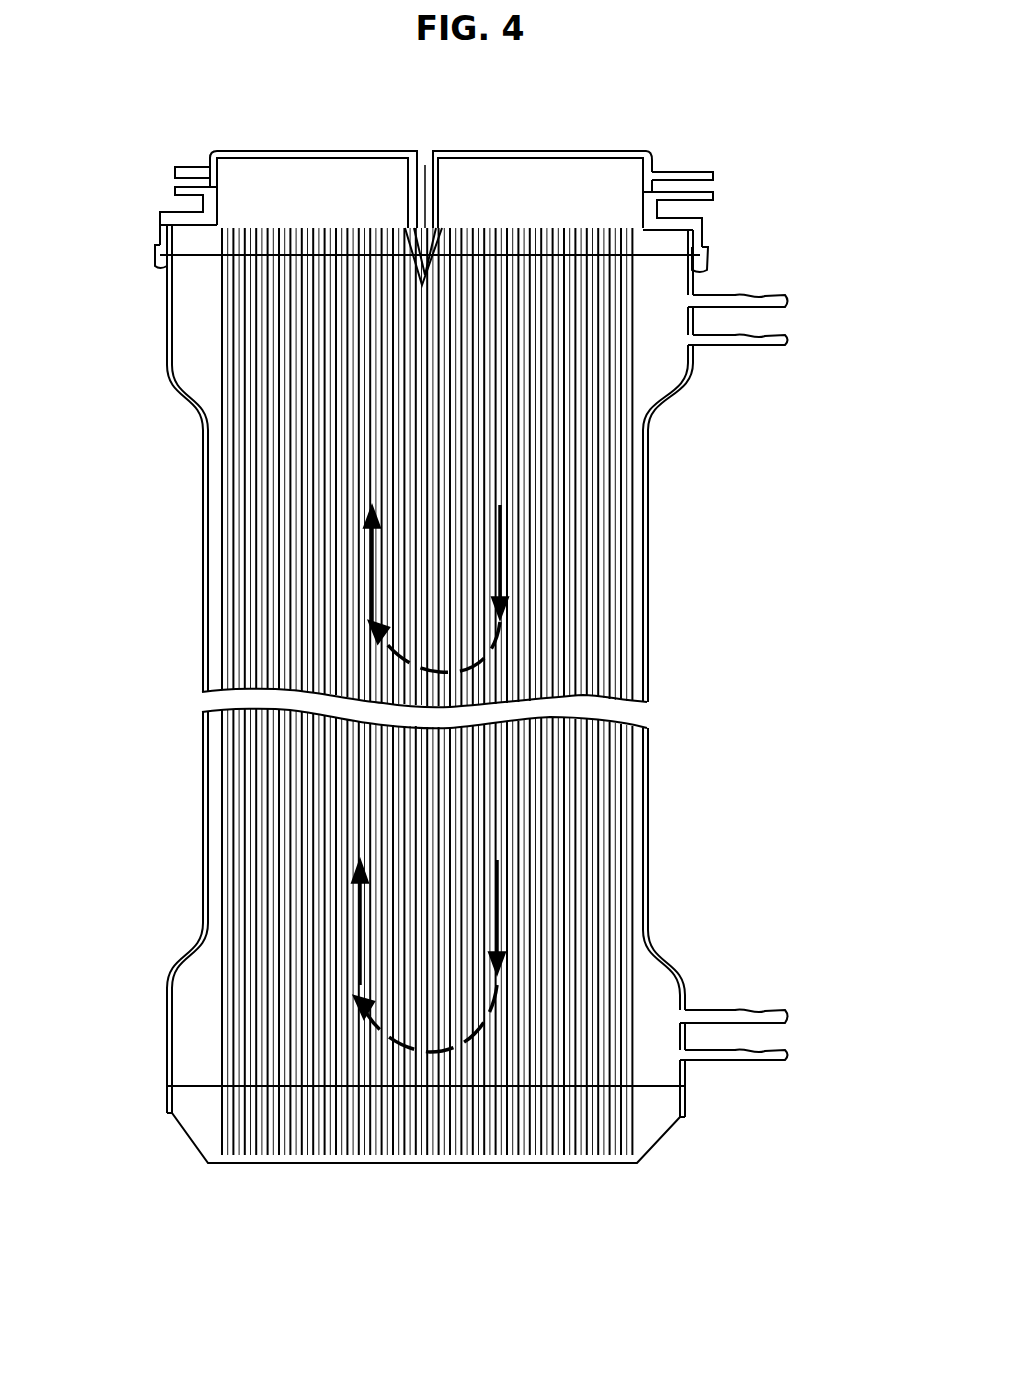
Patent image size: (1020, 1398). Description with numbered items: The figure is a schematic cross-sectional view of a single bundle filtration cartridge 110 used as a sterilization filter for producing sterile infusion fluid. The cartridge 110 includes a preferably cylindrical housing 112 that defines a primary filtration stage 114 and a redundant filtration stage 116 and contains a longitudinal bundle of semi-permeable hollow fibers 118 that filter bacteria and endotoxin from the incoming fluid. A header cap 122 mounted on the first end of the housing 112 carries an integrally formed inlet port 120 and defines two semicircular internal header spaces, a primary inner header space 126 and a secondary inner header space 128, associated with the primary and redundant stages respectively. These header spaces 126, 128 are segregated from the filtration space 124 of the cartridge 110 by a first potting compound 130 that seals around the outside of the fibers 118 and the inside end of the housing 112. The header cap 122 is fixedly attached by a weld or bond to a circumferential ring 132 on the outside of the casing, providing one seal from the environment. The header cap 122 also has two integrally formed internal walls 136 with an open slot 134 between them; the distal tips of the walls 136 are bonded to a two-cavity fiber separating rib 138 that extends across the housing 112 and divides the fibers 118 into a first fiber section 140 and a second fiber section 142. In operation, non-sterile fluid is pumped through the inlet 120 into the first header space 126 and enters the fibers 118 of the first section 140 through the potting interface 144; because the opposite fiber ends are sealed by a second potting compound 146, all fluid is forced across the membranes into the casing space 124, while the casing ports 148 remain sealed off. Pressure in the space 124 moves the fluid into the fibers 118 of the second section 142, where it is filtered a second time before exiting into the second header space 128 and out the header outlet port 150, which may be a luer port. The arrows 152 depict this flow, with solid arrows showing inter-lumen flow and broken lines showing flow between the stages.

The cartridge 110 is at (640, 712).
The housing 112 is at (200, 672).
The primary filtration stage 114 is at (575, 500).
The redundant filtration stage 116 is at (305, 425).
The semi-permeable hollow fibers 118 is at (600, 620).
The inlet port 120 is at (716, 180).
The header cap 122 is at (540, 152).
The filtration space 124 is at (445, 398).
The primary inner header space 126 is at (603, 170).
The secondary inner header space 128 is at (318, 168).
The first potting compound 130 is at (678, 247).
The circumferential ring 132 is at (152, 254).
The open slot 134 is at (425, 165).
The internal walls 136 is at (435, 203).
The fiber separating rib 138 is at (418, 272).
The first fiber section 140 is at (560, 805).
The second fiber section 142 is at (275, 855).
The potting interface 144 is at (262, 228).
The second potting compound 146 is at (645, 1118).
The casing ports 148 is at (775, 1045).
The header outlet port 150 is at (175, 183).
The arrows 152 is at (488, 628).